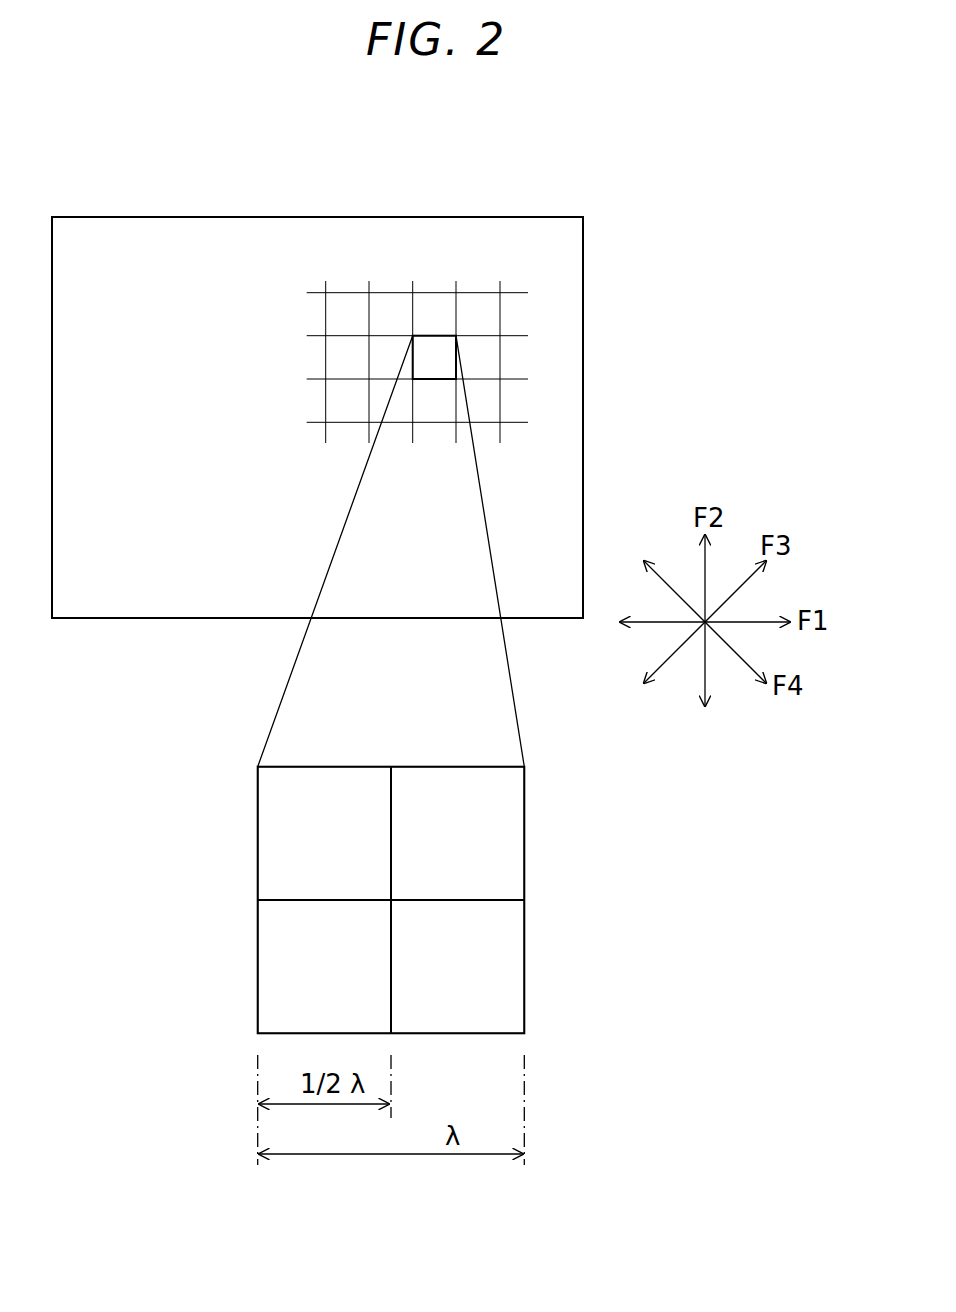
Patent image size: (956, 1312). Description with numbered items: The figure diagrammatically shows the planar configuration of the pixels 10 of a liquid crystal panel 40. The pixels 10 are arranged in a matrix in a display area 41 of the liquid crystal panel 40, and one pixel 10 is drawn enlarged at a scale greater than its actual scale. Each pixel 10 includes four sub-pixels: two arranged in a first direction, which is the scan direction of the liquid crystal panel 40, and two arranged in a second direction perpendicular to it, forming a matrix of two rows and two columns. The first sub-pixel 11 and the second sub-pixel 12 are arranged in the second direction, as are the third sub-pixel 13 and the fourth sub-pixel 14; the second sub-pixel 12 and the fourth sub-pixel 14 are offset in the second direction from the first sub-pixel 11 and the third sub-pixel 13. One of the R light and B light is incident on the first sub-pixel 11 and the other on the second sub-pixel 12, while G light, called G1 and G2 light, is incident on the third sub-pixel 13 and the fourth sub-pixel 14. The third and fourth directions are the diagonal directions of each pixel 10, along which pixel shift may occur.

The liquid crystal panel 40 is at (118, 203).
The display area 41 is at (147, 419).
The pixel 10 is at (436, 335).
The first sub-pixel 11 is at (508, 800).
The second sub-pixel 12 is at (508, 925).
The third sub-pixel 13 is at (271, 872).
The fourth sub-pixel 14 is at (271, 997).